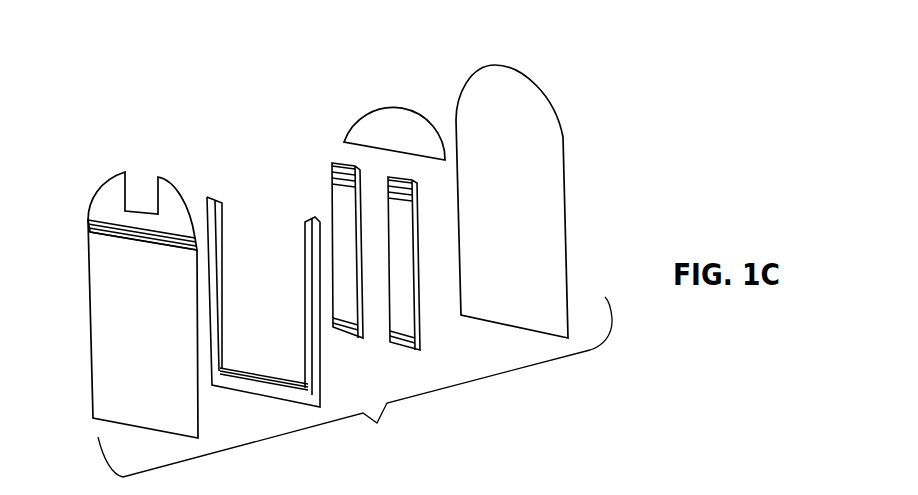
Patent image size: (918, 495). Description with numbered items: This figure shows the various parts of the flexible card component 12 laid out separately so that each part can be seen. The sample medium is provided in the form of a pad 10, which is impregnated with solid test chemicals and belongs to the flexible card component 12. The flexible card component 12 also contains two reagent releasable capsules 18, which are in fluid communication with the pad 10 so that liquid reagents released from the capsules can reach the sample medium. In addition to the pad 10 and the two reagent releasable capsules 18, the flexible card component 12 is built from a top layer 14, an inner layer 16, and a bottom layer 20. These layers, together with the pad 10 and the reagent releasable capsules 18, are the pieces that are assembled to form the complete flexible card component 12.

The pad 10 is at (380, 112).
The flexible card component 12 is at (355, 387).
The top layer 14 is at (115, 357).
The inner layer 16 is at (207, 197).
The reagent releasable capsules 18 is at (390, 182).
The bottom layer 20 is at (490, 100).